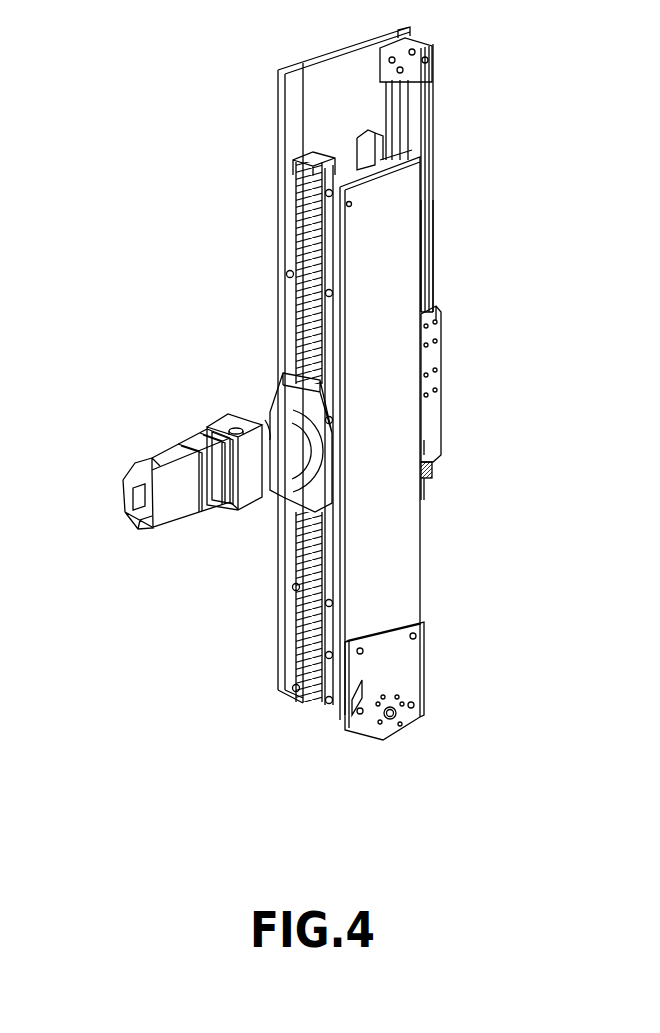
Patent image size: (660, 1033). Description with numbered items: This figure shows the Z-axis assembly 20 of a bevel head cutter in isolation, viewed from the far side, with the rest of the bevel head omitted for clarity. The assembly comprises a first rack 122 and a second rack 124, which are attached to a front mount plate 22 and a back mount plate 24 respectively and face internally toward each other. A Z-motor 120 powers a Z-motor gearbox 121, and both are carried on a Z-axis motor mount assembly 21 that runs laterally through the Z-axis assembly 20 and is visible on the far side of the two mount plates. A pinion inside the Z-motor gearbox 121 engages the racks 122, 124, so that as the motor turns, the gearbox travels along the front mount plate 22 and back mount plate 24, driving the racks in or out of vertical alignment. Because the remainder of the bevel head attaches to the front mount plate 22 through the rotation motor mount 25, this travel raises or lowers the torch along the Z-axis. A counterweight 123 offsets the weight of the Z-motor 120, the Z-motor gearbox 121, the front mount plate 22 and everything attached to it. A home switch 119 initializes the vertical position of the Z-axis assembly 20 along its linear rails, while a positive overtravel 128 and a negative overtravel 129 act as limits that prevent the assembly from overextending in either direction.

The Z-axis assembly 20 is at (160, 94).
The back mount plate 24 is at (337, 53).
The first rack 122 is at (297, 167).
The second rack 124 is at (300, 184).
The front mount plate 22 is at (393, 552).
The rotation motor mount 25 is at (385, 678).
The positive overtravel 128 is at (431, 146).
The home switch 119 is at (431, 173).
The counterweight 123 is at (431, 258).
The Z-axis motor mount assembly 21 is at (438, 403).
The negative overtravel 129 is at (432, 465).
The Z-motor gearbox 121 is at (207, 430).
The Z-motor 120 is at (132, 468).